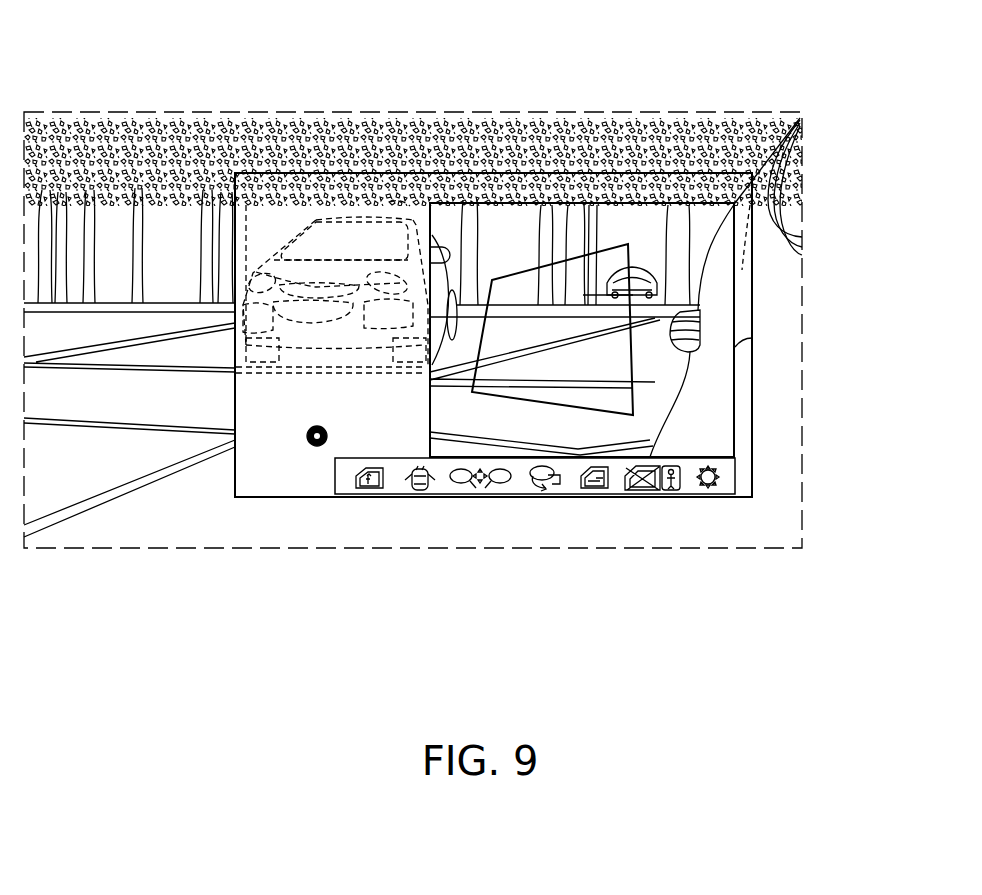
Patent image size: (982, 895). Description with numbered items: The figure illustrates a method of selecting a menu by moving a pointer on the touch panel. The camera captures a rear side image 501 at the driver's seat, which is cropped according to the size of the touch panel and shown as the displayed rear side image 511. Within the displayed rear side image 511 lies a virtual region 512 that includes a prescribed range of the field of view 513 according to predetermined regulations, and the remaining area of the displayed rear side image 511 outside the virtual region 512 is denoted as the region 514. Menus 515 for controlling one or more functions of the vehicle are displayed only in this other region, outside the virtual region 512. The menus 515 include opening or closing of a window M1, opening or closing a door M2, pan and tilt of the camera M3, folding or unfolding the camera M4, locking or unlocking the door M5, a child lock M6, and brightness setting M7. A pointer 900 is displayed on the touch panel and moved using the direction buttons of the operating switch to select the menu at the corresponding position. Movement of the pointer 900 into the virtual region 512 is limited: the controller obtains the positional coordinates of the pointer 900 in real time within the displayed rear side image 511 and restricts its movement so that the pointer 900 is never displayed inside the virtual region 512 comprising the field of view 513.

The rear side image 501 is at (80, 112).
The displayed rear side image 511 is at (753, 290).
The virtual region 512 is at (734, 343).
The field of view 513 is at (635, 400).
The region other than the virtual region 514 is at (350, 217).
The pointer 900 is at (316, 447).
The menus 515 is at (715, 600).
The window opening or closing menu M1 is at (367, 490).
The door opening or closing menu M2 is at (413, 490).
The camera pan and tilt menu M3 is at (473, 490).
The camera folding or unfolding menu M4 is at (538, 490).
The door locking or unlocking menu M5 is at (593, 490).
The child lock menu M6 is at (657, 490).
The brightness setting menu M7 is at (708, 490).